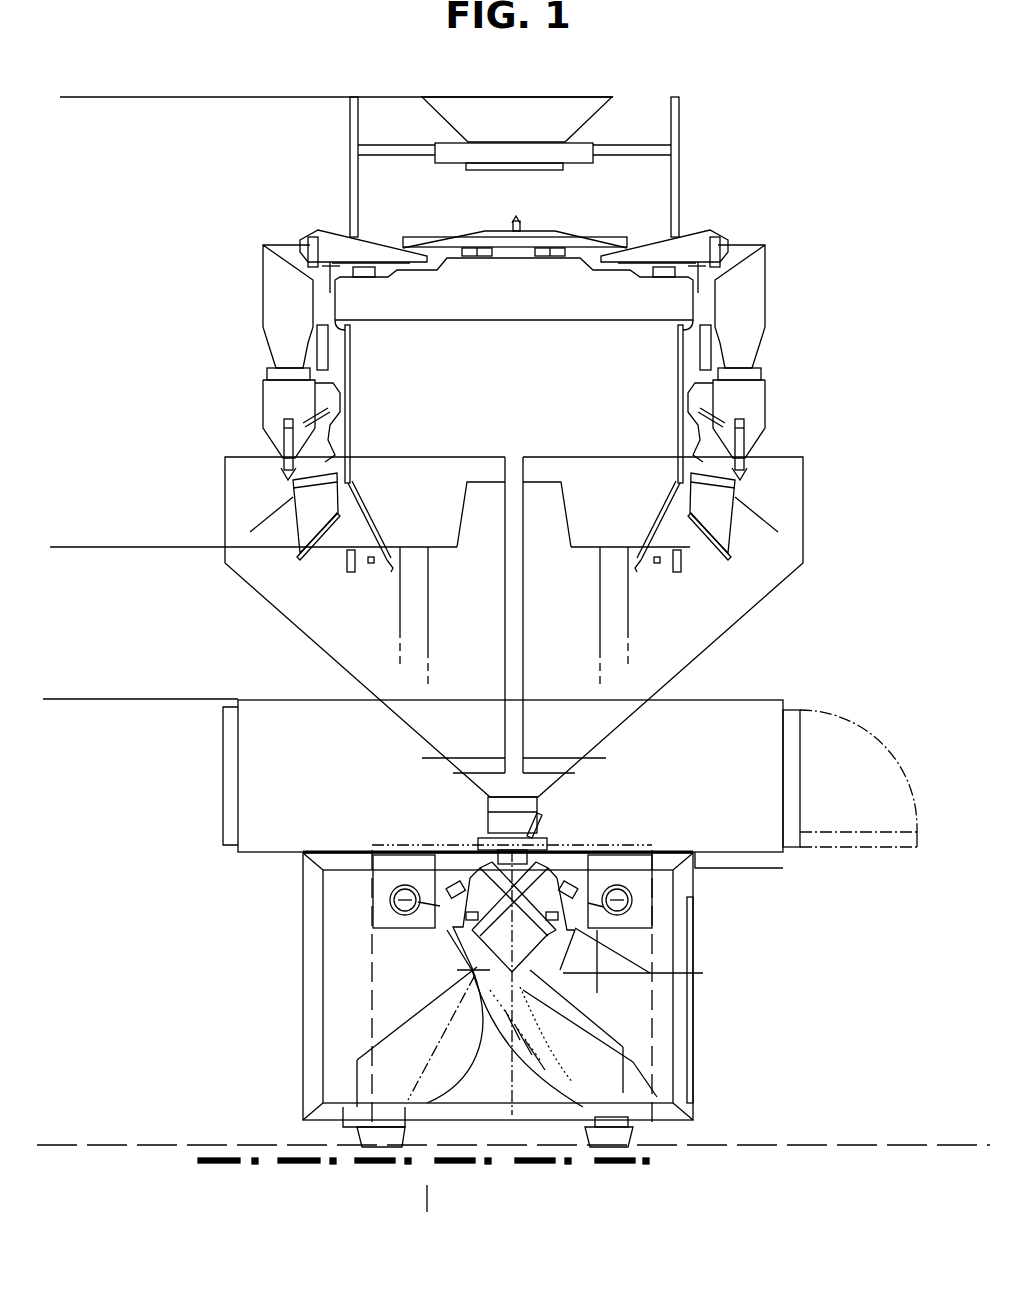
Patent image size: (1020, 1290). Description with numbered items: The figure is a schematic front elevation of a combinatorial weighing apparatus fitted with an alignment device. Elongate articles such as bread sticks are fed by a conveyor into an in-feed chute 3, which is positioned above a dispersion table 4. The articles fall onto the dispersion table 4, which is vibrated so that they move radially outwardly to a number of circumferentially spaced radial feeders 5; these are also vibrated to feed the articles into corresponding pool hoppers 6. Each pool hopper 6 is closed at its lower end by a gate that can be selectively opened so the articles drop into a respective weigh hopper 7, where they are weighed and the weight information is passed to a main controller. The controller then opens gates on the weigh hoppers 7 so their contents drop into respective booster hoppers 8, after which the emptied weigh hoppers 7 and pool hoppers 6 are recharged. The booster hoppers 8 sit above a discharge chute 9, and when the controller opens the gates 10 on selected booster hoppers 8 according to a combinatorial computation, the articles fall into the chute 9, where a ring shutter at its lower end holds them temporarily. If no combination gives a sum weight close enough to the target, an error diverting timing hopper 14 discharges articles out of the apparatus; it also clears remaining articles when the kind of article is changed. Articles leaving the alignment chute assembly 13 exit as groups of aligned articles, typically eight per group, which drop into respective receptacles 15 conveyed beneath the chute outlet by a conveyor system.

The in-feed chute 3 is at (438, 97).
The dispersion table 4 is at (533, 230).
The radial feeders 5 is at (332, 238).
The pool hoppers 6 is at (265, 296).
The weigh hopper 7 is at (270, 405).
The booster hoppers 8 is at (290, 525).
The discharge chute 9 is at (298, 642).
The gates 10 is at (310, 545).
The alignment chute assembly 13 is at (392, 1013).
The error diverting timing hopper 14 is at (445, 887).
The receptacles 15 is at (215, 1163).